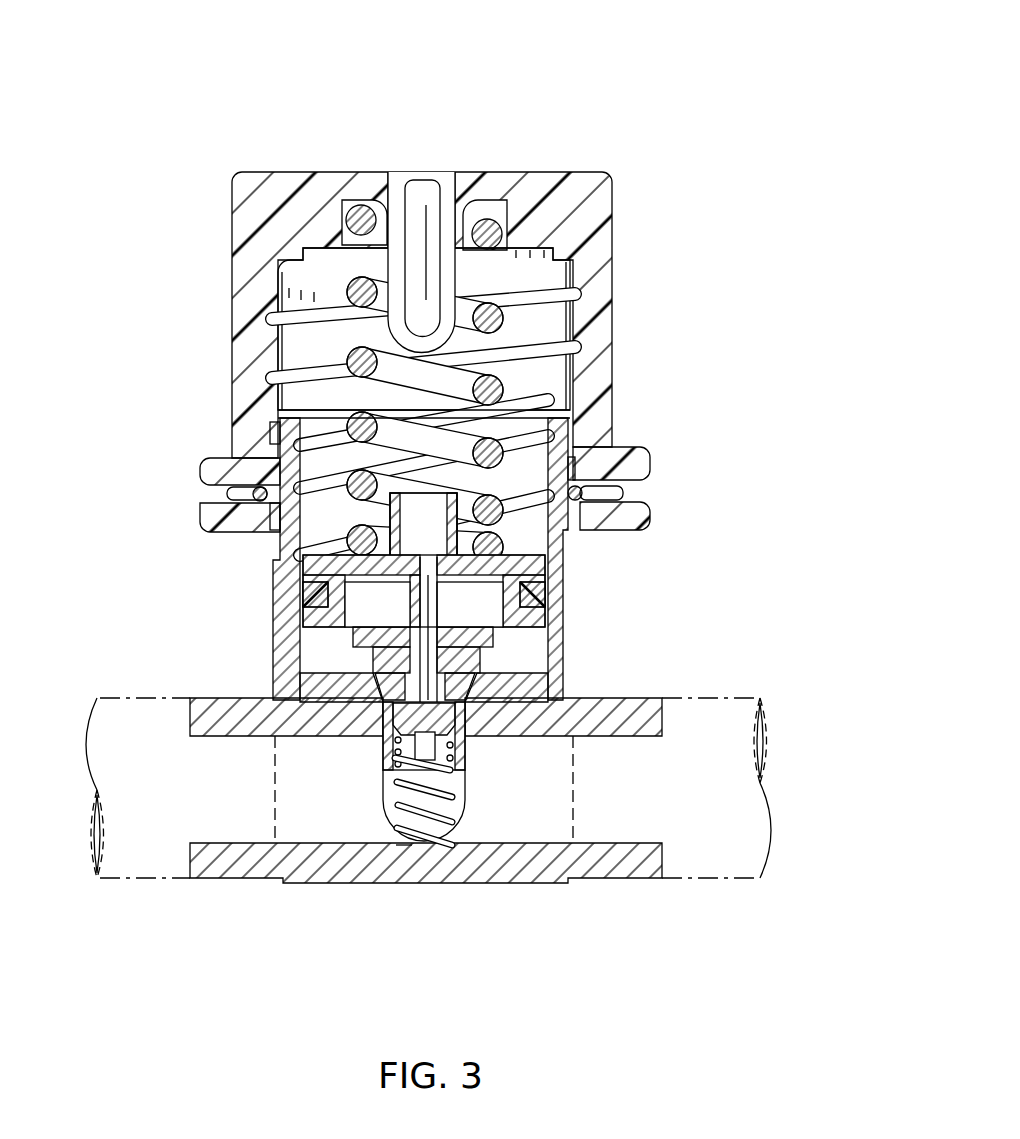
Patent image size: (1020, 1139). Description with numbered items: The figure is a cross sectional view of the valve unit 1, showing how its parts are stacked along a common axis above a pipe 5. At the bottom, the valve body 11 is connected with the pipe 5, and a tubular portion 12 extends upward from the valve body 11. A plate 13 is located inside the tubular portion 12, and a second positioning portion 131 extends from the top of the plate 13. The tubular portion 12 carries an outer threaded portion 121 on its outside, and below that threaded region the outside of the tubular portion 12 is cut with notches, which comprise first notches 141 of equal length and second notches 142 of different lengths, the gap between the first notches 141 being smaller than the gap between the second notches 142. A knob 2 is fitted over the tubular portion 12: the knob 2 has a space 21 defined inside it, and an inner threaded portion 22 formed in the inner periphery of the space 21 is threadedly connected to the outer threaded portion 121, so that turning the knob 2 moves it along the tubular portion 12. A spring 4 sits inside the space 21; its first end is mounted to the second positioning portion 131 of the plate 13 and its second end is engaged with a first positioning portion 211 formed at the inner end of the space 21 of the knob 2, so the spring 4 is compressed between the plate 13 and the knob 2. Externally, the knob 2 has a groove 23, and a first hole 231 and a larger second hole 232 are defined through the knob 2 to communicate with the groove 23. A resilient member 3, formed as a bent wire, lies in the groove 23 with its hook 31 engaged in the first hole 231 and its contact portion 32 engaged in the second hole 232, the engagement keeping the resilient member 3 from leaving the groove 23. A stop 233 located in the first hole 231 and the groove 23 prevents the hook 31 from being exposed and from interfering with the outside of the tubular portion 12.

The valve unit 1 is at (528, 112).
The knob 2 is at (307, 168).
The first positioning portion 211 is at (345, 236).
The space 21 is at (292, 342).
The spring 4 is at (530, 311).
The inner threaded portion 22 is at (296, 421).
The tubular portion 12 is at (522, 415).
The resilient member 3 is at (165, 497).
The outer threaded portion 121 is at (572, 455).
The groove 23 is at (200, 490).
The second positioning portion 131 is at (576, 477).
The hook 31 is at (230, 495).
The contact portion 32 is at (622, 490).
The first hole 231 is at (255, 495).
The second hole 232 is at (588, 507).
The stop 233 is at (268, 530).
The first notches 141 is at (285, 627).
The second notches 142 is at (563, 598).
The plate 13 is at (452, 645).
The valve body 11 is at (505, 865).
The pipe 5 is at (689, 898).